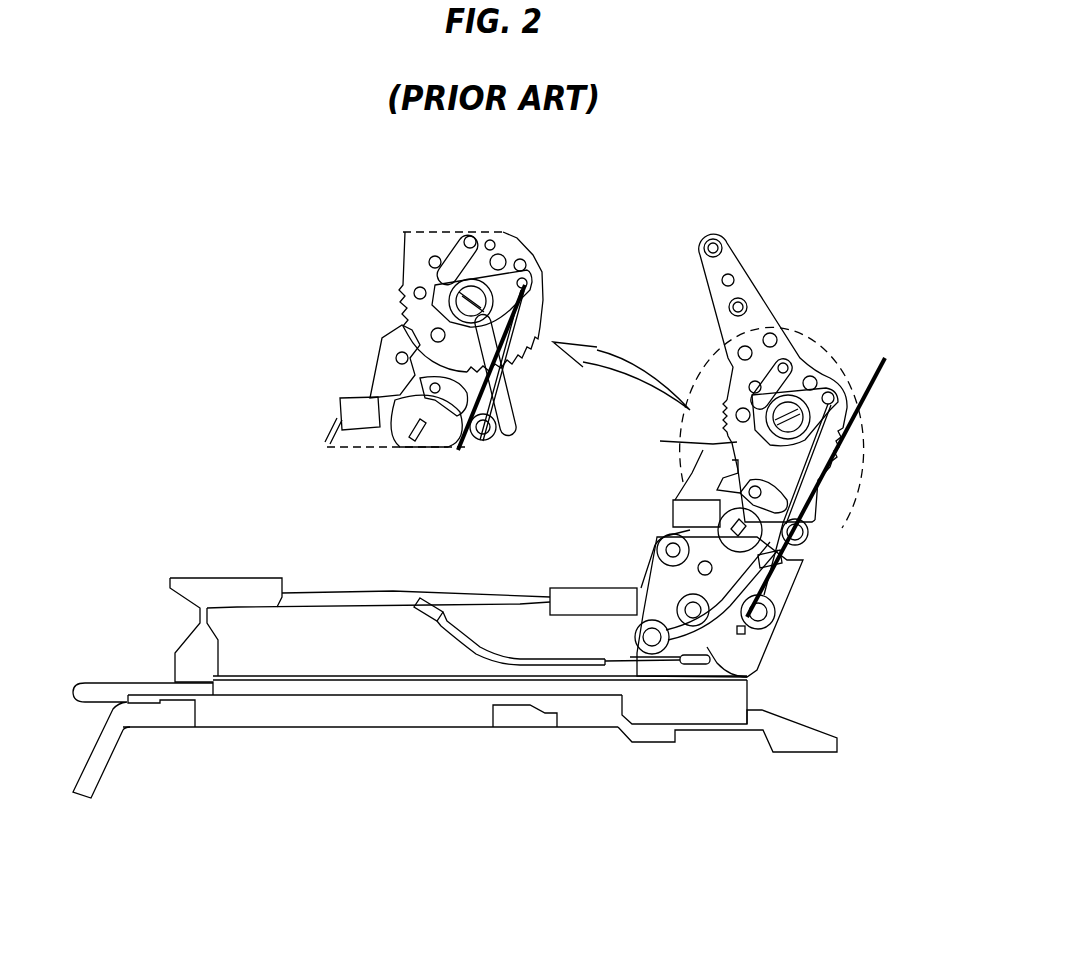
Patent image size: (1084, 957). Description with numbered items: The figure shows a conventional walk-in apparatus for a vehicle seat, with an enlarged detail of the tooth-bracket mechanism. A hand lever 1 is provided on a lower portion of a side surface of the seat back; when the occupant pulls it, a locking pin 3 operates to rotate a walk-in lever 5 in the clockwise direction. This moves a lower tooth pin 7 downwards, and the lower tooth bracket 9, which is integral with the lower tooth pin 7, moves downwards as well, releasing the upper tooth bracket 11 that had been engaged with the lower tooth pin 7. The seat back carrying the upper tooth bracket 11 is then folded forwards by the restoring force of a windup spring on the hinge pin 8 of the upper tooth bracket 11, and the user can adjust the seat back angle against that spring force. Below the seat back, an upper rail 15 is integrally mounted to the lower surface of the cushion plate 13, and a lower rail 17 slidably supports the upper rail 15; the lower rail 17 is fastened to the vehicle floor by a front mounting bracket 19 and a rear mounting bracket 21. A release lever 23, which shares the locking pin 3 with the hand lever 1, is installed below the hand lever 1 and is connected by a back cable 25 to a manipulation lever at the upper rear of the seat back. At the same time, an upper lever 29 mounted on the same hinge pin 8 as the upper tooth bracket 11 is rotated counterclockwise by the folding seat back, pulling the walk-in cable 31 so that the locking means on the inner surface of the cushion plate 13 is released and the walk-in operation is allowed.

The hand lever 1 is at (575, 585).
The locking pin 3 is at (708, 540).
The walk-in lever 5 is at (407, 420).
The lower tooth pin 7 is at (430, 383).
The hinge pin 8 is at (468, 285).
The lower tooth bracket 9 is at (412, 362).
The upper tooth bracket 11 is at (412, 255).
The cushion plate 13 is at (327, 628).
The upper rail 15 is at (740, 697).
The lower rail 17 is at (385, 713).
The front mounting bracket 19 is at (115, 745).
The rear mounting bracket 21 is at (628, 740).
The release lever 23 is at (733, 655).
The back cable 25 is at (860, 425).
The upper lever 29 is at (510, 280).
The walk-in cable 31 is at (805, 487).